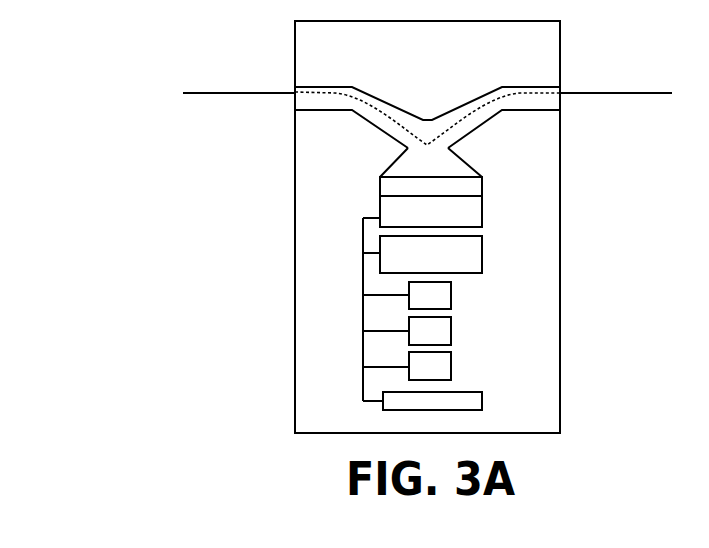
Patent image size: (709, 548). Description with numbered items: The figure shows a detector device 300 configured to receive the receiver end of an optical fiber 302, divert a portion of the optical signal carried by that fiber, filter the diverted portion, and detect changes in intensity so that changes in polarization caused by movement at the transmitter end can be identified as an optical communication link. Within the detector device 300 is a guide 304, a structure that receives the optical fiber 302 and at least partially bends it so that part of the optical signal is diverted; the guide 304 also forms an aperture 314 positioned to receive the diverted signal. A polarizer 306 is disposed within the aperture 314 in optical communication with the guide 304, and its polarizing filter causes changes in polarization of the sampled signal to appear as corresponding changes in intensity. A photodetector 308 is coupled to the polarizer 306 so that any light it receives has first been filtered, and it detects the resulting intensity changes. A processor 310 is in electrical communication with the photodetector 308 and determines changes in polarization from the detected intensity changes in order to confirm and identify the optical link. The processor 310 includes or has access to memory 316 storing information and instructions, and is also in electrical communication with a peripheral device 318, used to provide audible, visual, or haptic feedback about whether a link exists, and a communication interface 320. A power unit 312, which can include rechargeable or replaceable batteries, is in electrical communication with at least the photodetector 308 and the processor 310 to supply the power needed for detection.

The detector device 300 is at (162, 47).
The optical fiber 302 is at (627, 93).
The guide 304 is at (507, 87).
The polarizer 306 is at (482, 191).
The photodetector 308 is at (379, 206).
The processor 310 is at (482, 239).
The power unit 312 is at (482, 404).
The aperture 314 is at (454, 152).
The memory 316 is at (451, 288).
The peripheral device 318 is at (451, 325).
The communication interface 320 is at (451, 360).